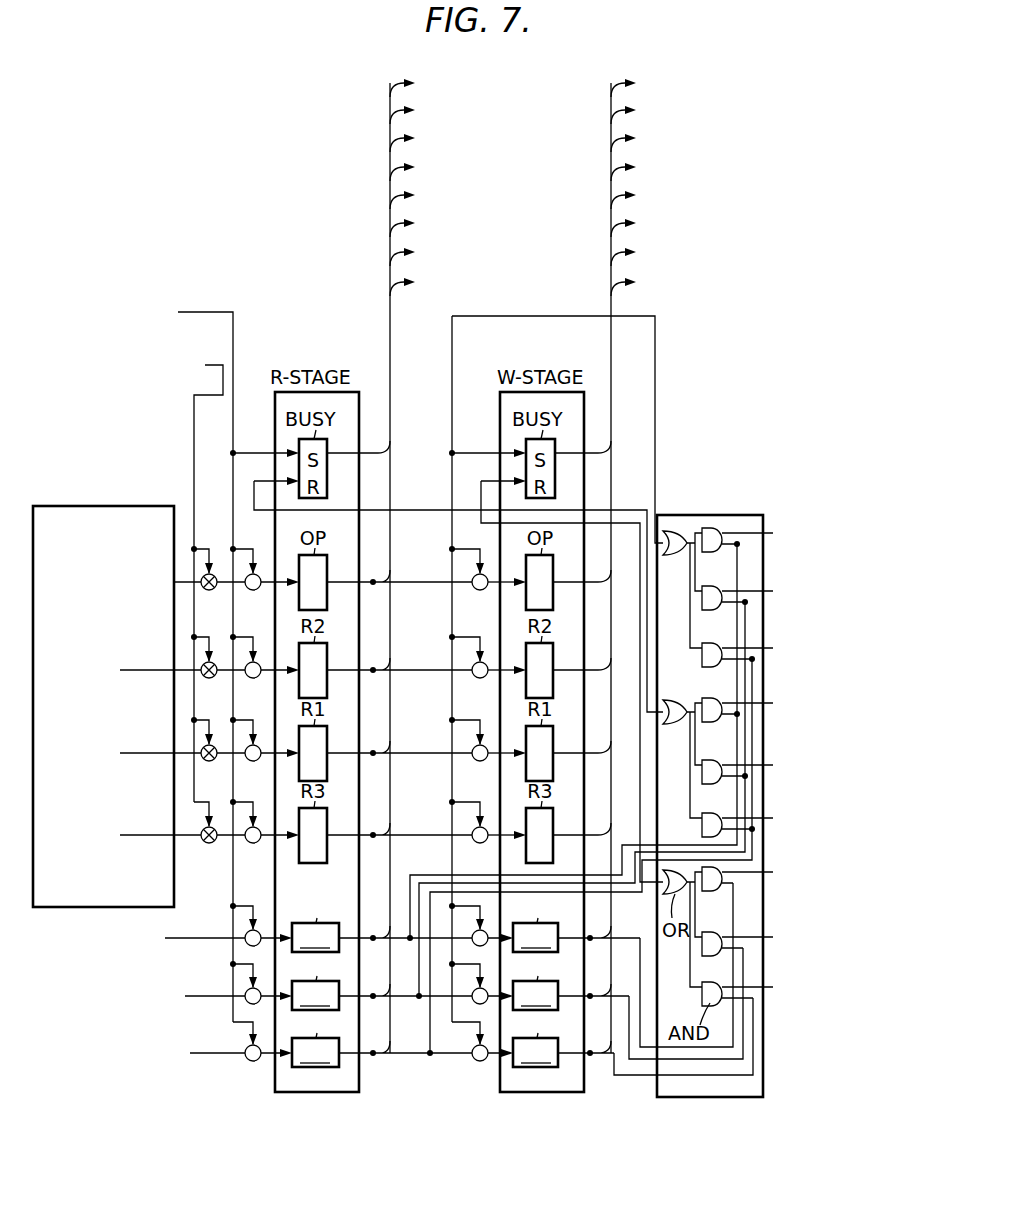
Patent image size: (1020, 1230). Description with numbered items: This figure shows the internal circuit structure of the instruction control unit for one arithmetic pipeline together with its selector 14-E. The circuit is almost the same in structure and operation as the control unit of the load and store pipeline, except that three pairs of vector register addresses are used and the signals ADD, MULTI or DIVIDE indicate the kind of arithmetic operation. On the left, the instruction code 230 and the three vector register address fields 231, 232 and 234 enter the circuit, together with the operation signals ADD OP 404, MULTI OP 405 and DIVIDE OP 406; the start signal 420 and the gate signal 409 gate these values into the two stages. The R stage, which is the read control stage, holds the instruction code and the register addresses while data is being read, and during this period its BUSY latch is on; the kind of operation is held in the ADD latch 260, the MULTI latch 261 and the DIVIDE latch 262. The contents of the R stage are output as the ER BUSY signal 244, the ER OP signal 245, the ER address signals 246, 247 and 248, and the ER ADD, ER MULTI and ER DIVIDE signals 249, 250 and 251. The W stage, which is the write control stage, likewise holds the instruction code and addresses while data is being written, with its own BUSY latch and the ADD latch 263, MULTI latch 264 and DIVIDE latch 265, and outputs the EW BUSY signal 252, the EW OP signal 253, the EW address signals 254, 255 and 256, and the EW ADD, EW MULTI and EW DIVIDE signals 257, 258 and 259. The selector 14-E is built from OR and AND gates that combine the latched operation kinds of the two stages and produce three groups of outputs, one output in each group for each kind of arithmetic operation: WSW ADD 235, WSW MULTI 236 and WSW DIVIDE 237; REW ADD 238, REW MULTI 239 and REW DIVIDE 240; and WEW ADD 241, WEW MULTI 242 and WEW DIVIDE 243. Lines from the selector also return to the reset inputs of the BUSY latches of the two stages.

The selector 14-E is at (763, 1097).
The op code field 230 is at (172, 582).
The R2 register field 231 is at (172, 670).
The R1 register field 232 is at (172, 753).
The R3 register field 234 is at (172, 835).
The WSW ADD gate output 235 is at (789, 534).
The WSW MULTI gate output 236 is at (795, 592).
The WSW DIVIDE gate output 237 is at (800, 649).
The REW ADD gate output 238 is at (786, 704).
The REW MULTI gate output 239 is at (793, 766).
The REW DIVIDE gate output 240 is at (798, 819).
The WEW ADD gate output 241 is at (789, 873).
The WEW MULTI gate output 242 is at (795, 938).
The WEW DIVIDE gate output 243 is at (800, 988).
The ER BUSY signal 244 is at (478, 84).
The ER OP signal 245 is at (465, 111).
The ER P2 signal 246 is at (464, 139).
The ER R1 signal 247 is at (465, 168).
The ER R3 signal 248 is at (465, 196).
The ER ADD signal 249 is at (473, 224).
The ER MULTI signal 250 is at (480, 253).
The ER DIVIDE signal 251 is at (486, 283).
The EW BUSY signal 252 is at (705, 84).
The EW OP signal 253 is at (692, 111).
The EW R2 signal 254 is at (691, 139).
The EW R1 signal 255 is at (691, 168).
The EW R3 signal 256 is at (691, 196).
The EW ADD signal 257 is at (700, 224).
The EW MULTI signal 258 is at (707, 253).
The EW DIVIDE signal 259 is at (712, 283).
The R-stage ADD latch 260 is at (382, 924).
The R-stage MULTI latch 261 is at (379, 982).
The R-stage DIVIDE latch 262 is at (377, 1039).
The W-stage ADD latch 263 is at (576, 924).
The W-stage MULTI latch 264 is at (568, 982).
The W-stage DIVIDE latch 265 is at (558, 1039).
The ADD OP signal 404 is at (166, 938).
The MULTI OP signal 405 is at (164, 996).
The DIVIDE OP signal 406 is at (164, 1053).
The GATE SIG. E signal 409 is at (129, 590).
The START E signal 420 is at (167, 673).